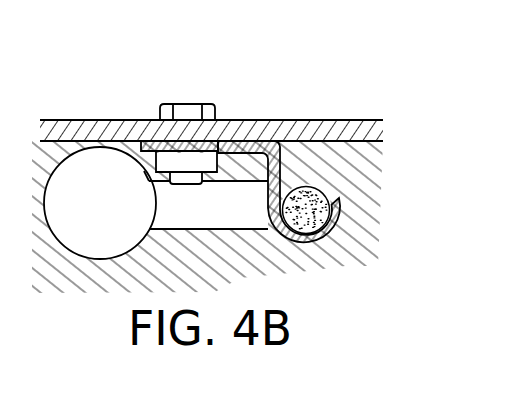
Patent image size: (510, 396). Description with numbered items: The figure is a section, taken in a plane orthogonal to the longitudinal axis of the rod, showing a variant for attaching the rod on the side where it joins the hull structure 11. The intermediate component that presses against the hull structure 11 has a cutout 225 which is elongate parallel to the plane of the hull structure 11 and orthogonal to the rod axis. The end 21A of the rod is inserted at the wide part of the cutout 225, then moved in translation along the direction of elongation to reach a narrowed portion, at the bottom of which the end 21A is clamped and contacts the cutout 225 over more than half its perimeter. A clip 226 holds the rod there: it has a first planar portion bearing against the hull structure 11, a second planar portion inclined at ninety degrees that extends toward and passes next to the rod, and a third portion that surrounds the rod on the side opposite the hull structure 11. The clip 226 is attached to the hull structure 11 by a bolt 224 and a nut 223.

The hull structure 11 is at (72, 131).
The end of the rod 21A is at (305, 192).
The nut 223 is at (175, 165).
The bolt 224 is at (185, 110).
The cutout 225 is at (103, 216).
The clip 226 is at (233, 147).